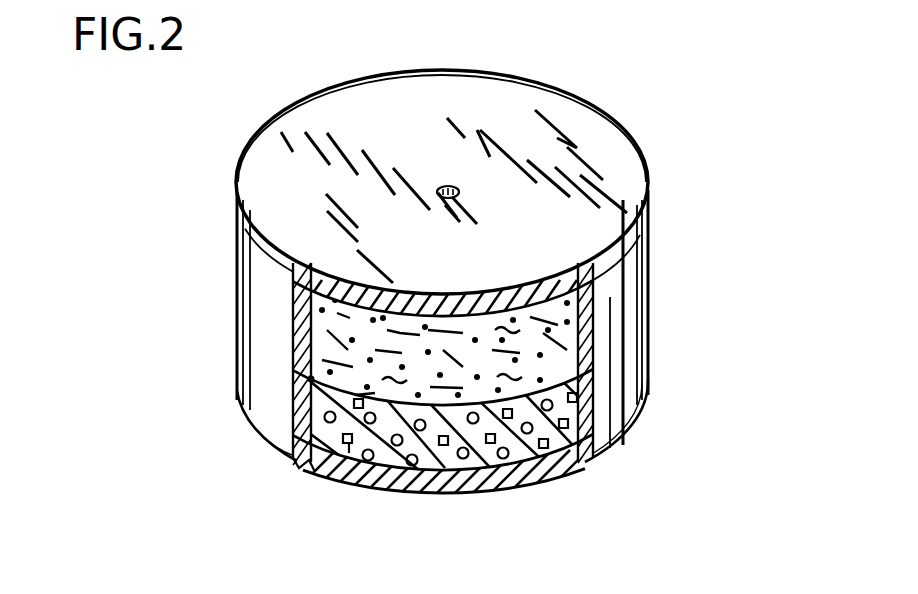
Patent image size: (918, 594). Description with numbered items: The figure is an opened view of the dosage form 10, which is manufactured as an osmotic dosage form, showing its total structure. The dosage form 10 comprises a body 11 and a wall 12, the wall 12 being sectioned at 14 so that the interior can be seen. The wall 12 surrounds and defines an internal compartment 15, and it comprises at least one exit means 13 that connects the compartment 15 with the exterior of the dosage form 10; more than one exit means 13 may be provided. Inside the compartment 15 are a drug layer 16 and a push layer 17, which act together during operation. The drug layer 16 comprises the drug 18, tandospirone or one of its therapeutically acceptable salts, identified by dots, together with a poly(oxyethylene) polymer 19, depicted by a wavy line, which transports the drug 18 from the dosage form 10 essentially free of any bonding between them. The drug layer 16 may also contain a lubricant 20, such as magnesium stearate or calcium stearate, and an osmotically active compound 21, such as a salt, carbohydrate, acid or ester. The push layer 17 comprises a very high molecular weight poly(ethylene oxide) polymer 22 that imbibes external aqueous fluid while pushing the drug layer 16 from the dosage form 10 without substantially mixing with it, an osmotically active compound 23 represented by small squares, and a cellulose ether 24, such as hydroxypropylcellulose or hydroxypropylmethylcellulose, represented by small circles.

The dosage form 10 is at (704, 81).
The body 11 is at (596, 312).
The wall 12 is at (600, 334).
The exit means 13 is at (447, 188).
The section 14 is at (477, 486).
The internal compartment 15 is at (295, 318).
The drug layer 16 is at (598, 349).
The push layer 17 is at (608, 437).
The drug 18 is at (311, 379).
The polymer 19 is at (395, 332).
The lubricant 20 is at (340, 344).
The osmotically active compound 21 is at (556, 372).
The polymer 22 is at (542, 465).
The osmotically active compound 23 is at (347, 477).
The cellulose ether 24 is at (411, 490).